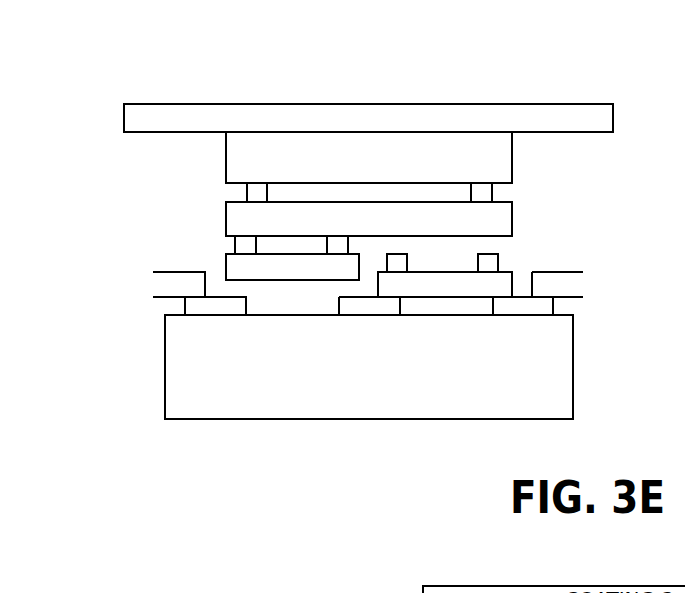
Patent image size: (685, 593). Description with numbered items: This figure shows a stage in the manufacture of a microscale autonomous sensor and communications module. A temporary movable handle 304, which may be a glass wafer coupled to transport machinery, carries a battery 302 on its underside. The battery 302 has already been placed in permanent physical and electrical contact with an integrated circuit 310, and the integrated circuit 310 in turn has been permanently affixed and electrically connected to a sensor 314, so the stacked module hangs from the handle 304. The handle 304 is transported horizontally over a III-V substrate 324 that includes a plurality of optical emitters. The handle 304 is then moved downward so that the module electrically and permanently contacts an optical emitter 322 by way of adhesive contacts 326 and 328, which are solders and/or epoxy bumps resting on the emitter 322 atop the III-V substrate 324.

The temporary movable handle 304 is at (193, 104).
The battery 302 is at (226, 167).
The integrated circuit 310 is at (226, 218).
The sensor 314 is at (226, 264).
The optical emitter 322 is at (378, 275).
The adhesive contact 326 is at (407, 259).
The adhesive contact 328 is at (498, 259).
The III-V substrate 324 is at (165, 342).